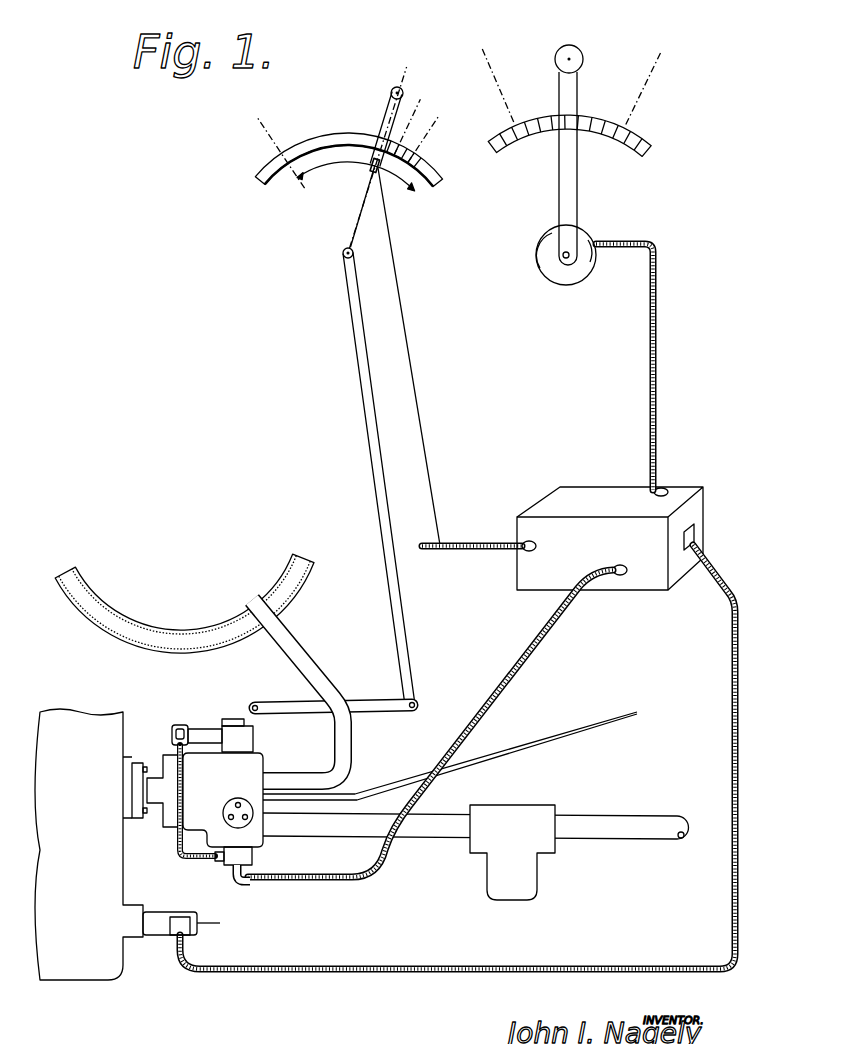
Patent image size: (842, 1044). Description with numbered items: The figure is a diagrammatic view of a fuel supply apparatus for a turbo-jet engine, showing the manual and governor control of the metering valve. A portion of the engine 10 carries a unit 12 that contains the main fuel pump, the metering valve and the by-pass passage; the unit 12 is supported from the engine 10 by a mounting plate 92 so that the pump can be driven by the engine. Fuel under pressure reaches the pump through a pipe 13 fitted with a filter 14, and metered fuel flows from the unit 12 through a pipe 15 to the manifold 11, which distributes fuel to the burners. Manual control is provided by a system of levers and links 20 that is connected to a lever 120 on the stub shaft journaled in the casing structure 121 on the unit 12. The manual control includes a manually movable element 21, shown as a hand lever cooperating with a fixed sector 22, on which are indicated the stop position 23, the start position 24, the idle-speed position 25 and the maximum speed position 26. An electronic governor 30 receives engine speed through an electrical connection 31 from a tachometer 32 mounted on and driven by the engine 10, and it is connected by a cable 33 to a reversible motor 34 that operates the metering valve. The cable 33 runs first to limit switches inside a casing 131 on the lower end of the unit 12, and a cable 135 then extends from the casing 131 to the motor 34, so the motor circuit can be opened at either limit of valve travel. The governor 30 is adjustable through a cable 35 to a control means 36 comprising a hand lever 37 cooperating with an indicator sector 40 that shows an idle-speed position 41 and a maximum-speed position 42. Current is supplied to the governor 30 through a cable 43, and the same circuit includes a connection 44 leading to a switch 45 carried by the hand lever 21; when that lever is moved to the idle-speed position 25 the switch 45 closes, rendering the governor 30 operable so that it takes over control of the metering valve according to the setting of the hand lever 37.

The engine 10 is at (78, 950).
The manifold 11 is at (108, 595).
The unit 12 is at (163, 827).
The pipe 13 is at (623, 830).
The filter 14 is at (500, 865).
The pipe 15 is at (300, 656).
The manual control 20 is at (384, 556).
The manually movable element 21 is at (385, 113).
The fixed sector 22 is at (312, 142).
The stop position 23 is at (432, 140).
The start position 24 is at (412, 120).
The idle-speed position 25 is at (403, 61).
The maximum speed position 26 is at (258, 143).
The governor 30 is at (584, 500).
The electrical connection 31 is at (325, 972).
The tachometer 32 is at (160, 925).
The cable 33 is at (522, 692).
The reversible motor 34 is at (207, 728).
The cable 35 is at (658, 321).
The control means 36 is at (555, 272).
The hand lever 37 is at (579, 188).
The indicator sector 40 is at (640, 138).
The idle-speed position 41 is at (650, 70).
The maximum-speed position 42 is at (487, 50).
The cable 43 is at (500, 552).
The connection 44 is at (409, 312).
The switch 45 is at (370, 174).
The mounting plate 92 is at (137, 762).
The lever 120 is at (238, 708).
The casing structure 121 is at (253, 746).
The casing 131 is at (238, 860).
The cable 135 is at (188, 780).